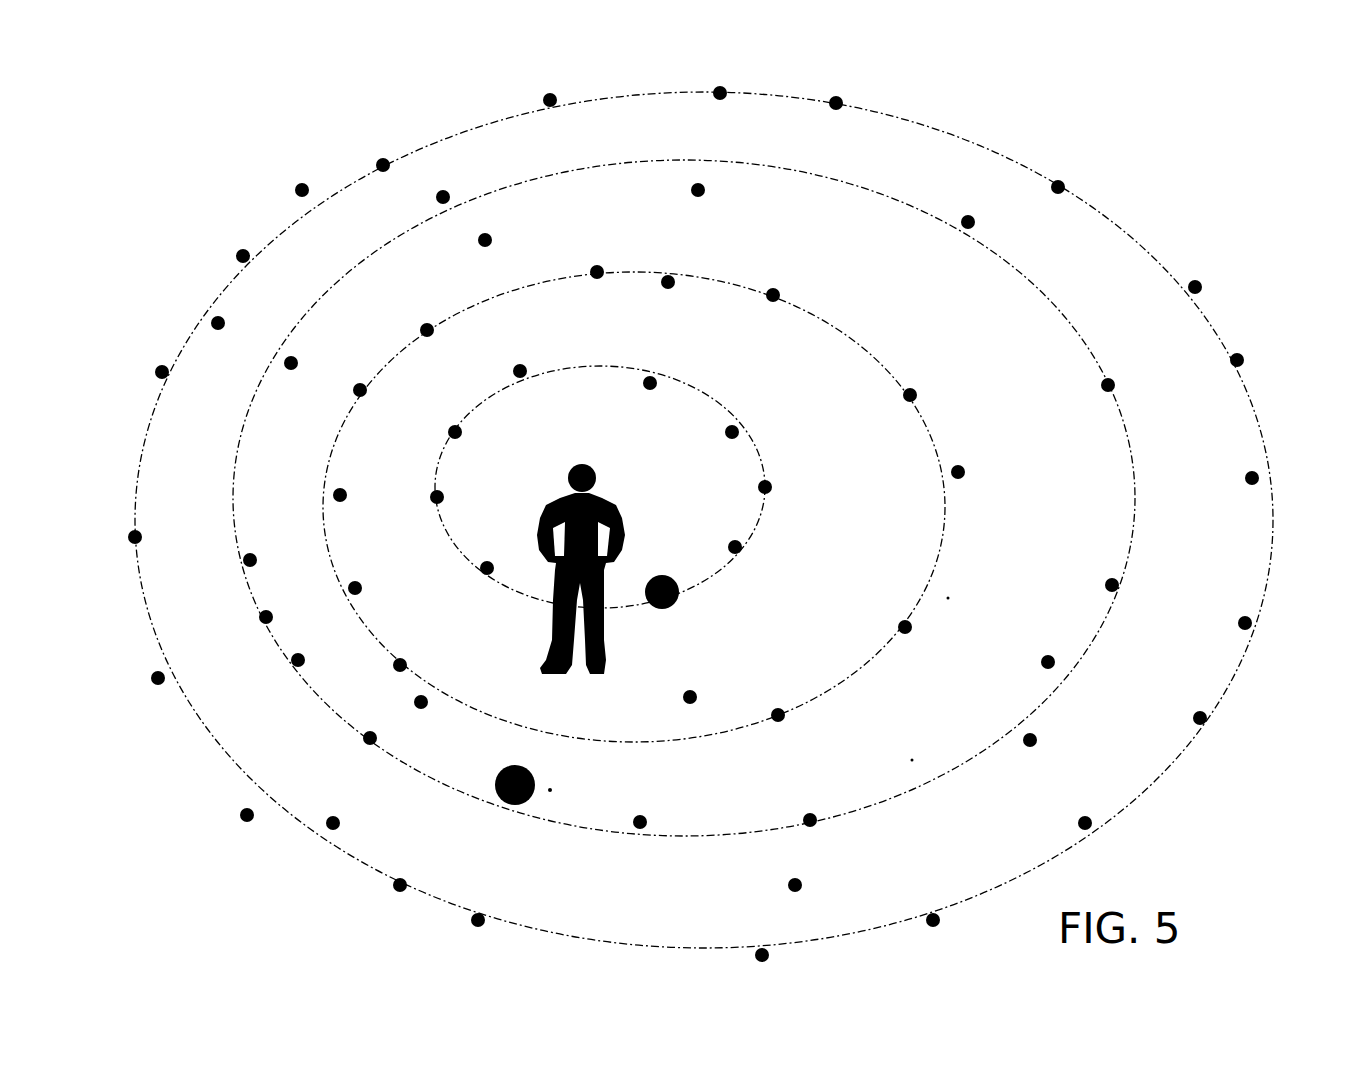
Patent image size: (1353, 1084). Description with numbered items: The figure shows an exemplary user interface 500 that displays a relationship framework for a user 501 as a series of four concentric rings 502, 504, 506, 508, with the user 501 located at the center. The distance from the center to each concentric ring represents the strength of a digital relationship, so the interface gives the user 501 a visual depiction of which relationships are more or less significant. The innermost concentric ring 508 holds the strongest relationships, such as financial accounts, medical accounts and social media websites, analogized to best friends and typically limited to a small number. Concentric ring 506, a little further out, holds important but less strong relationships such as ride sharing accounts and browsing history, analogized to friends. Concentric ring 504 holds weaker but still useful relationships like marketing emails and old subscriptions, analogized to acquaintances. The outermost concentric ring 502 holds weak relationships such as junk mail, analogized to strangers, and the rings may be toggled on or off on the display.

The user interface 500 is at (298, 93).
The user 501 is at (627, 520).
The concentric ring 502 is at (970, 113).
The concentric ring 504 is at (1018, 269).
The concentric ring 506 is at (799, 283).
The concentric ring 508 is at (760, 457).